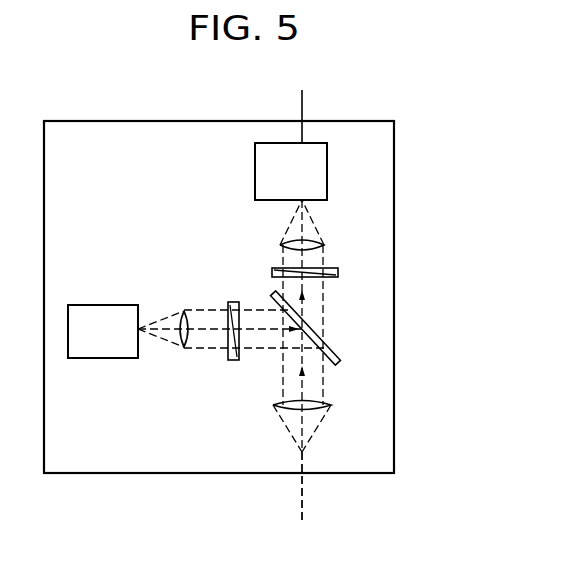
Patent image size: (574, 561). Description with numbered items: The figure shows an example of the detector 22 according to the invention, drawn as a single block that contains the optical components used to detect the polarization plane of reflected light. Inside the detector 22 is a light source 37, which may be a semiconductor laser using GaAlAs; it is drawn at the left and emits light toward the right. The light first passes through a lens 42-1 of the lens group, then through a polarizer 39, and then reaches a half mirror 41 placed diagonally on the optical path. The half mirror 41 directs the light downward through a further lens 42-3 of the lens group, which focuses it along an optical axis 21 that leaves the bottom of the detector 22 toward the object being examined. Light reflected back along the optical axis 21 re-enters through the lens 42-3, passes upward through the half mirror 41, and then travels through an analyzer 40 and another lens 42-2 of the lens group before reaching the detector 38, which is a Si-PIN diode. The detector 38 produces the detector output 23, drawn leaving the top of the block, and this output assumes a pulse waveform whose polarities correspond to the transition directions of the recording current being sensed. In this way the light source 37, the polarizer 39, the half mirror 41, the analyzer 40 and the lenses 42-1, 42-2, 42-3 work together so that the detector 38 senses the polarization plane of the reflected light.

The optical axis 21 is at (303, 494).
The detector 22 is at (394, 318).
The detector output 23 is at (304, 111).
The light source 37 is at (105, 358).
The detector 38 is at (327, 172).
The polarizer 39 is at (233, 360).
The analyzer 40 is at (338, 272).
The half mirror 41 is at (336, 352).
The lens of lens group 42-1 is at (182, 311).
The lens of lens group 42-2 is at (281, 244).
The lens of lens group 42-3 is at (273, 408).